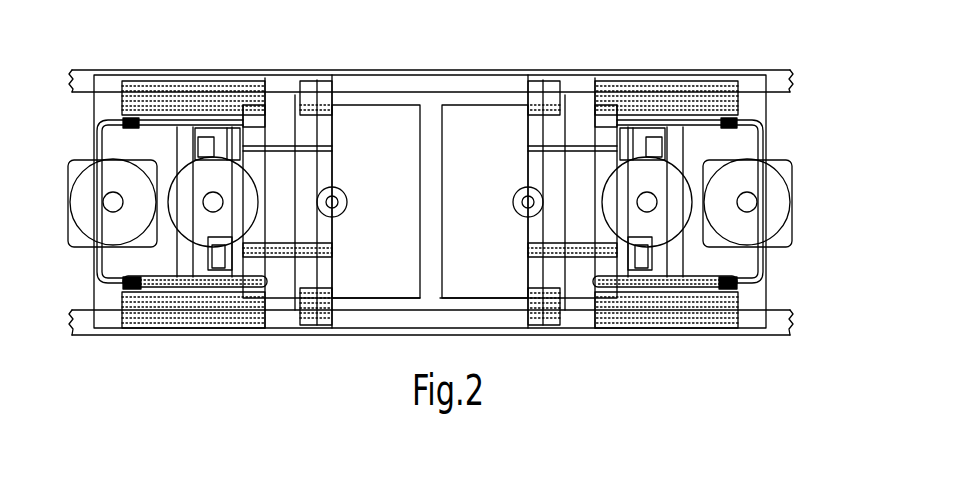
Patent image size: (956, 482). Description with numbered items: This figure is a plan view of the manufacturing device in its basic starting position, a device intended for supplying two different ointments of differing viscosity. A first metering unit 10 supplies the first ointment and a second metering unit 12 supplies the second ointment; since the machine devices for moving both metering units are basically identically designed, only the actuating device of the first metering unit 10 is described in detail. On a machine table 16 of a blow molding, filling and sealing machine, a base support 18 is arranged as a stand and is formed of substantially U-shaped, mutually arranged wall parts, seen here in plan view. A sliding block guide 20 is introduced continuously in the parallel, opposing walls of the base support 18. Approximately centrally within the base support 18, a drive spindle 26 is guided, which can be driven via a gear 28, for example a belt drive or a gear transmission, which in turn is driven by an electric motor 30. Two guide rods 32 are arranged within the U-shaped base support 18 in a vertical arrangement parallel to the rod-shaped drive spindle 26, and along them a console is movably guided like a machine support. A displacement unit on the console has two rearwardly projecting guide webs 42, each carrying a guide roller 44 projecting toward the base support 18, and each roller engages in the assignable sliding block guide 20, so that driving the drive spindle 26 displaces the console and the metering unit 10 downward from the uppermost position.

The first metering unit 10 is at (389, 168).
The second metering unit 12 is at (495, 168).
The machine table 16 is at (618, 72).
The base support 18 is at (95, 78).
The sliding block guide 20 is at (142, 122).
The drive spindle 26 is at (215, 202).
The gear 28 is at (190, 137).
The electric motor 30 is at (83, 180).
The guide rods 32 is at (207, 140).
The guide webs 42 is at (130, 100).
The guide roller 44 is at (130, 125).